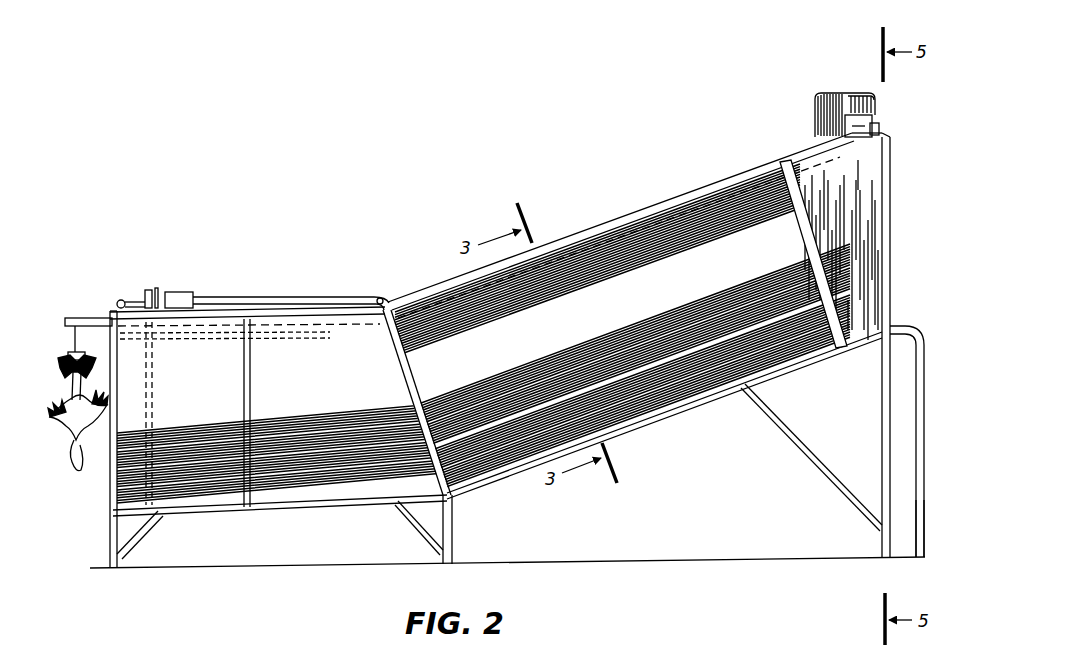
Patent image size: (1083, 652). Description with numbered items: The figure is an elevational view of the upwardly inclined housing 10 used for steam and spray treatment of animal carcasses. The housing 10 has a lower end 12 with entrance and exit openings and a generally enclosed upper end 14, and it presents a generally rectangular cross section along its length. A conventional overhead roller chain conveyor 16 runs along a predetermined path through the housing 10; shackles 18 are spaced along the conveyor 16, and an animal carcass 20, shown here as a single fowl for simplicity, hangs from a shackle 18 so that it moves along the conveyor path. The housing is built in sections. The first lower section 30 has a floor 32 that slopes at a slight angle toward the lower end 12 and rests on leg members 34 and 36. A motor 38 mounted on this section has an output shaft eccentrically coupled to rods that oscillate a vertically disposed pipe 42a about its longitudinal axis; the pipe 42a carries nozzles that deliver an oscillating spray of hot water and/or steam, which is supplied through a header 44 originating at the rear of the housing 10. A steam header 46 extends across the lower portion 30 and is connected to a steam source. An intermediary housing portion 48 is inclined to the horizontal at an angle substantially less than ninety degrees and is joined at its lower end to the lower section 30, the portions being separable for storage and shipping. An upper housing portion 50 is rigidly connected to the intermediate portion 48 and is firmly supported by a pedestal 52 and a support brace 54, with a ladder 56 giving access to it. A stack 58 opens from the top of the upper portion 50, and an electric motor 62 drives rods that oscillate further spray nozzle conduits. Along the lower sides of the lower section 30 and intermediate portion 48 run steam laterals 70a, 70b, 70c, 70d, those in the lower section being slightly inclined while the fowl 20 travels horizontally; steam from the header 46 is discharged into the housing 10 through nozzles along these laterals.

The upwardly inclined housing 10 is at (590, 226).
The lower end 12 is at (99, 505).
The upper end 14 is at (897, 244).
The overhead roller chain conveyor 16 is at (96, 318).
The shackles 18 is at (75, 342).
The animal carcass 20 is at (76, 460).
The first lower section 30 is at (291, 317).
The floor 32 is at (245, 509).
The leg member 34 is at (119, 555).
The leg member 36 is at (452, 552).
The motor 38 is at (181, 292).
The vertically disposed pipe 42a is at (150, 290).
The header 44 is at (121, 300).
The steam header 46 is at (380, 299).
The intermediary housing portion 48 is at (677, 199).
The upper housing portion 50 is at (790, 152).
The pedestal 52 is at (883, 391).
The support brace 54 is at (810, 450).
The ladder 56 is at (918, 545).
The stack 58 is at (830, 93).
The electric motor 62 is at (872, 107).
The steam lateral 70a is at (300, 418).
The steam lateral 70b is at (300, 445).
The steam lateral 70c is at (340, 463).
The steam lateral 70d is at (370, 483).